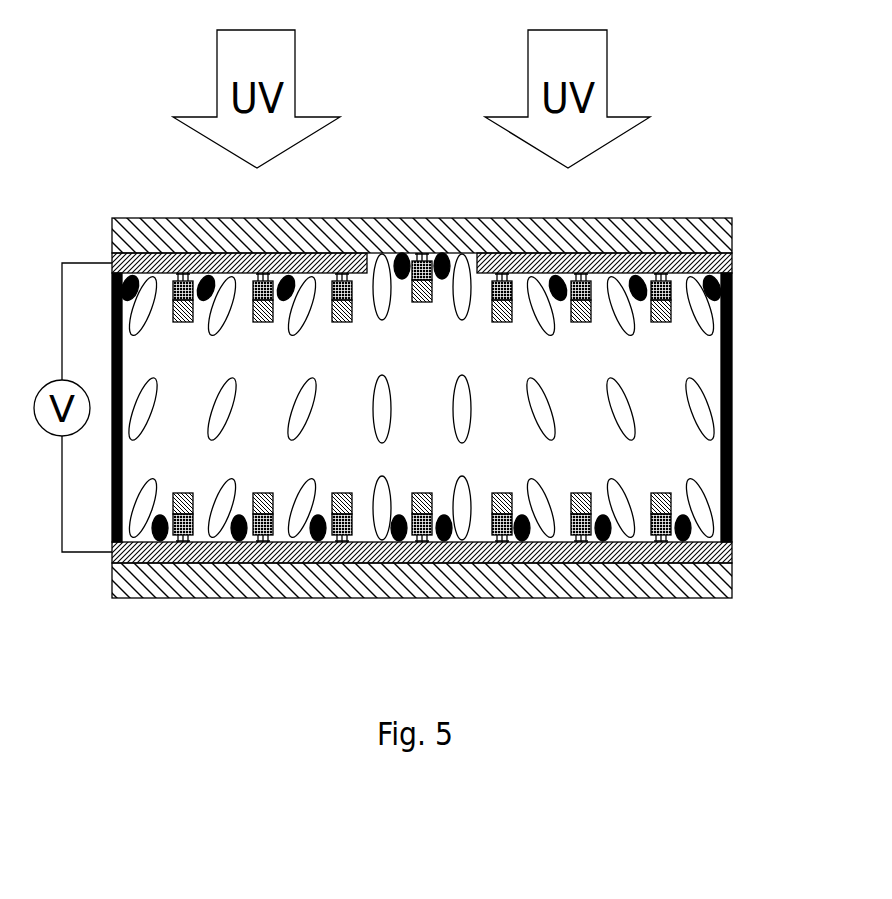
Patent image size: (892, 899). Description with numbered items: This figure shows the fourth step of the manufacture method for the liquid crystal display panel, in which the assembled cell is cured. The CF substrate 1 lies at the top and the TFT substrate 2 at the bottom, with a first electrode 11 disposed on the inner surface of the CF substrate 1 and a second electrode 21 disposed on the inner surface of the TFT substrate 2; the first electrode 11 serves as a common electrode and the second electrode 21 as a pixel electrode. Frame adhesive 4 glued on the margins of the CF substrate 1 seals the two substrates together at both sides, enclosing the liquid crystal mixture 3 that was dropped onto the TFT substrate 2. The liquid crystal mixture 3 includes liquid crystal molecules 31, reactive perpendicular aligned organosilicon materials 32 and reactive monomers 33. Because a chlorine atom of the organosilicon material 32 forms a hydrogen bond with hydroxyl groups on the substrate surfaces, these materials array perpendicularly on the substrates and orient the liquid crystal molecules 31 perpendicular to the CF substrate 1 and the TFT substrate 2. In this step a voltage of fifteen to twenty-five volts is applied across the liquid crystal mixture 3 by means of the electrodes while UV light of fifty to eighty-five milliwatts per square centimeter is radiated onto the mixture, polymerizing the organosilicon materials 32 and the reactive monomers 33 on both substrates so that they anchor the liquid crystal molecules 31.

The CF substrate 1 is at (738, 220).
The first electrode 11 is at (215, 270).
The TFT substrate 2 is at (738, 542).
The second electrode 21 is at (238, 563).
The liquid crystal mixture 3 is at (480, 397).
The liquid crystal molecule 31 is at (618, 412).
The reactive perpendicular aligned organosilicon material 32 is at (671, 296).
The reactive monomer 33 is at (668, 313).
The frame adhesive 4 is at (732, 307).